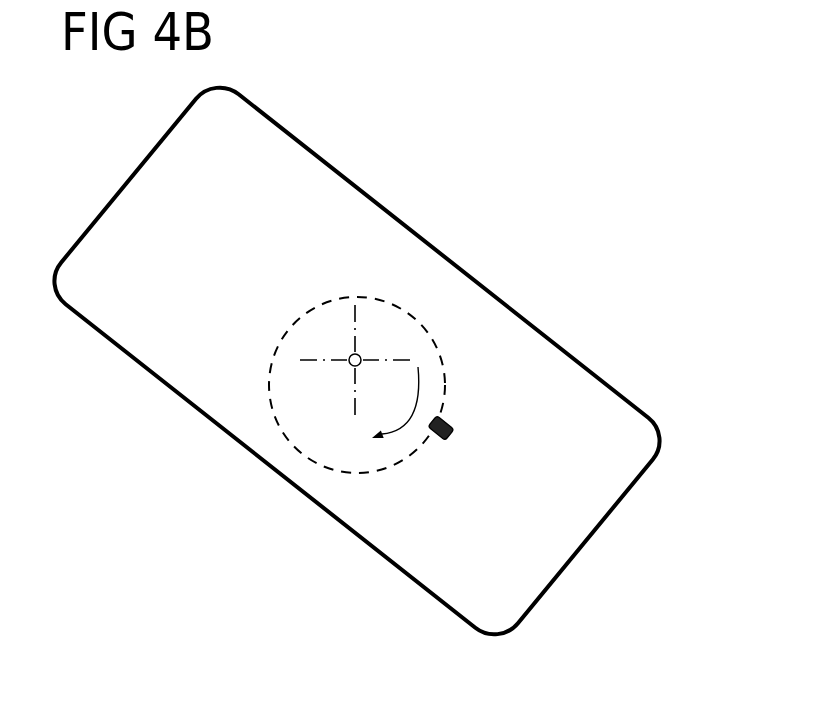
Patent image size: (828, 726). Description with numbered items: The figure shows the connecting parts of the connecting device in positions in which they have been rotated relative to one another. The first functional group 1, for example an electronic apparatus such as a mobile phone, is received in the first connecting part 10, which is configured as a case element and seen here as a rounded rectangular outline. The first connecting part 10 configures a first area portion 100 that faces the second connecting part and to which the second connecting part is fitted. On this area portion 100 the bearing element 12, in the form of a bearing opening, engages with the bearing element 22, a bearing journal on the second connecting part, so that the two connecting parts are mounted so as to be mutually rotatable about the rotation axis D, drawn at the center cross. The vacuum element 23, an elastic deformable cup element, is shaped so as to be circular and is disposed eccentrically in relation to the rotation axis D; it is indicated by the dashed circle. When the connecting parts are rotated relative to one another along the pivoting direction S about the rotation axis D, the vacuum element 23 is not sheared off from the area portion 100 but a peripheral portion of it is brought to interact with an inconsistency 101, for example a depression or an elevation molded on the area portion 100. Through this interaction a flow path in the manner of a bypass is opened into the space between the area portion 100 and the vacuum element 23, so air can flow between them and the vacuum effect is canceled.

The first functional group 1 is at (381, 361).
The first connecting part 10 is at (556, 343).
The first area portion 100 is at (381, 366).
The inconsistency 101 is at (447, 442).
The bearing element 12 is at (401, 305).
The bearing element 22 is at (361, 353).
The vacuum element 23 is at (437, 348).
The rotation axis D is at (351, 368).
The pivoting direction S is at (395, 402).